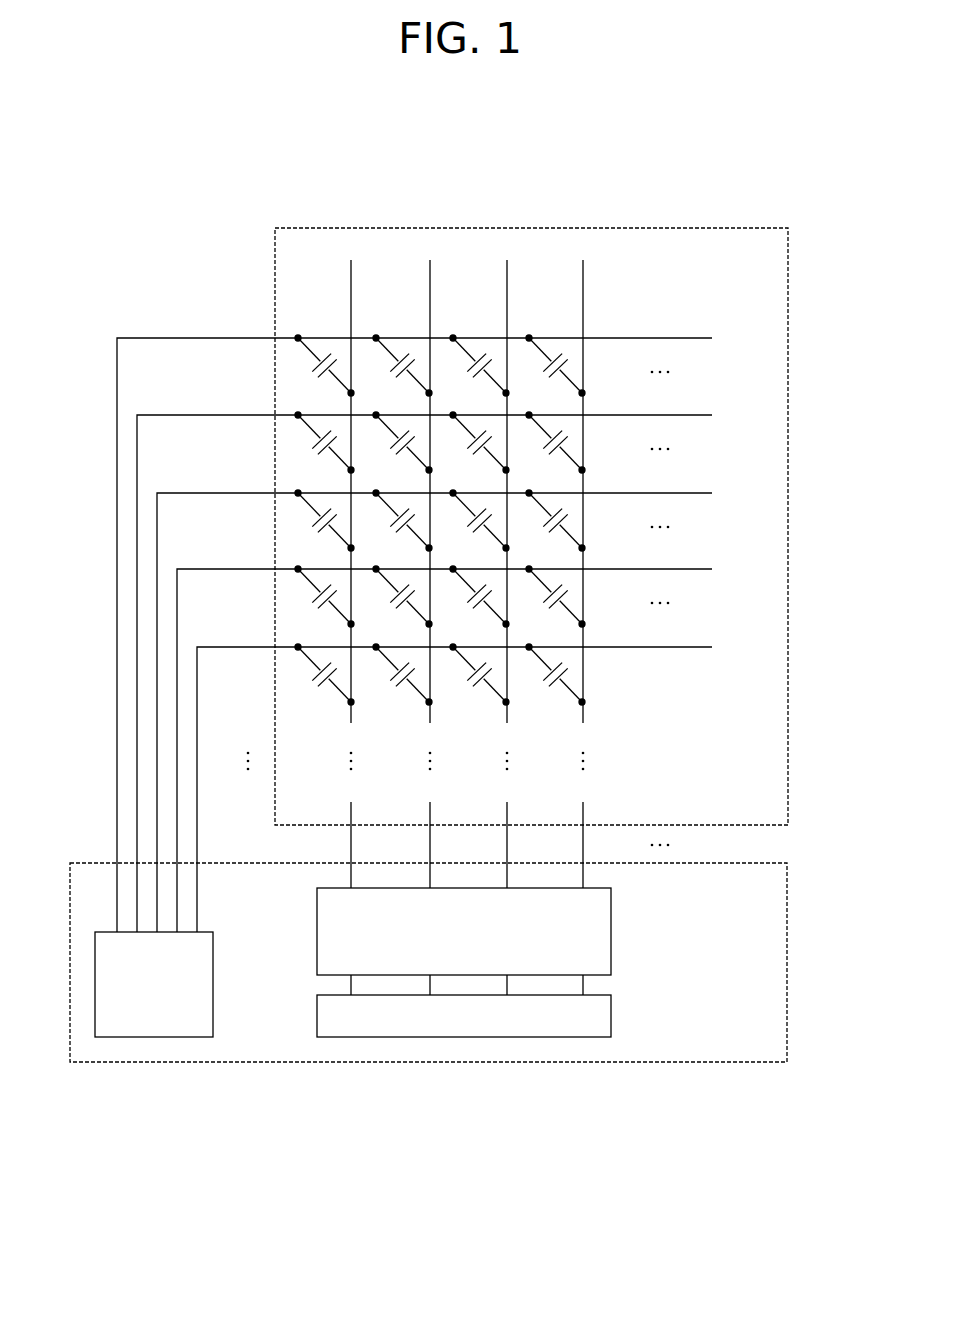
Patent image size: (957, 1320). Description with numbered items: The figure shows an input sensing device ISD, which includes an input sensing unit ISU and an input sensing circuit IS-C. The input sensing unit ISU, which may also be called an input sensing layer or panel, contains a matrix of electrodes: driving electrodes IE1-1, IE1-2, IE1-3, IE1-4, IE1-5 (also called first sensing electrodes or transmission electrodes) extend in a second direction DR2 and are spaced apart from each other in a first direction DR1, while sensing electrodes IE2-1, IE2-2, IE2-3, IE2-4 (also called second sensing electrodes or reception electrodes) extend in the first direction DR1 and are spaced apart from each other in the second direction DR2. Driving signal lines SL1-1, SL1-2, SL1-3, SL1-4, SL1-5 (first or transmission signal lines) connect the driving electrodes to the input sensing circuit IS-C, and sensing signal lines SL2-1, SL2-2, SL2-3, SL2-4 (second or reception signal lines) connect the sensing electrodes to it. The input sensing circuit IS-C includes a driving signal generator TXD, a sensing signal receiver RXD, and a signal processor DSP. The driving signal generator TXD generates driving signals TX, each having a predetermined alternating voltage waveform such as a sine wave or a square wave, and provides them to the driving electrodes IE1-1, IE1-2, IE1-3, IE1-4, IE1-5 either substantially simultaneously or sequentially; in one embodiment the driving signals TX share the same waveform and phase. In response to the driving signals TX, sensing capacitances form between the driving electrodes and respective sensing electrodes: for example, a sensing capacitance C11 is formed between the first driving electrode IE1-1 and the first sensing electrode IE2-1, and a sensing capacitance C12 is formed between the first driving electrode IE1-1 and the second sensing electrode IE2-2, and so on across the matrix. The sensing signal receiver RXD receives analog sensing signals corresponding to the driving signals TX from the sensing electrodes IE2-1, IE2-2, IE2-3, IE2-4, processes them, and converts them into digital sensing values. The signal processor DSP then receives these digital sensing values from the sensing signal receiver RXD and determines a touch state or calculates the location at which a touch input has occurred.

The input sensing device ISD is at (812, 197).
The input sensing unit ISU is at (788, 527).
The input sensing circuit IS-C is at (787, 963).
The first sensing electrode IE2-1 is at (353, 479).
The second sensing electrode IE2-2 is at (430, 479).
The sensing electrode IE2-3 is at (507, 479).
The sensing electrode IE2-4 is at (583, 479).
The first driving electrode IE1-1 is at (535, 340).
The driving electrode IE1-2 is at (535, 417).
The driving electrode IE1-3 is at (535, 495).
The driving electrode IE1-4 is at (535, 571).
The driving electrode IE1-5 is at (535, 649).
The driving signal line SL1-1 is at (207, 620).
The driving signal line SL1-2 is at (217, 659).
The driving signal line SL1-3 is at (227, 698).
The driving signal line SL1-4 is at (237, 736).
The driving signal line SL1-5 is at (247, 775).
The sensing signal line SL2-1 is at (319, 845).
The sensing signal line SL2-2 is at (397, 845).
The sensing signal line SL2-3 is at (473, 845).
The sensing signal line SL2-4 is at (550, 845).
The sensing capacitance C11 is at (319, 369).
The sensing capacitance C12 is at (397, 369).
The driving signal TX is at (97, 703).
The driving signal generator TXD is at (213, 985).
The sensing signal receiver RXD is at (611, 930).
The signal processor DSP is at (611, 1015).
The first direction DR1 is at (68, 1190).
The second direction DR2 is at (68, 1190).